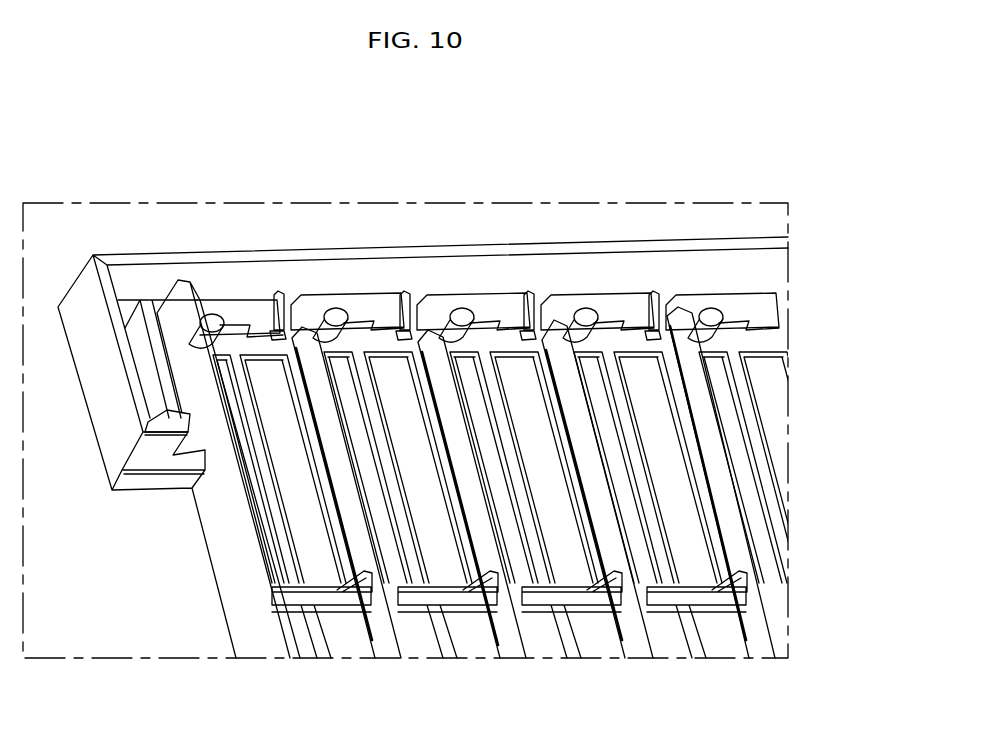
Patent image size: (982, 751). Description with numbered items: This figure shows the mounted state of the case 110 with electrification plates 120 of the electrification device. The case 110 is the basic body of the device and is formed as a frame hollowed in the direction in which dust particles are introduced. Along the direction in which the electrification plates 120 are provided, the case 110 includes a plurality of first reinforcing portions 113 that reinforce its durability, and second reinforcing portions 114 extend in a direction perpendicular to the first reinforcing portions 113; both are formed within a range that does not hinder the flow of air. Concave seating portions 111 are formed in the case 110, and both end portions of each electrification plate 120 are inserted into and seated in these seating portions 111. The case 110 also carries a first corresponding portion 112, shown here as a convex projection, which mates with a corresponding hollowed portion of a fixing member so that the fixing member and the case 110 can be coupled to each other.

The case 110 is at (134, 186).
The seating portion 111 is at (402, 306).
The first corresponding portion 112 is at (466, 313).
The first reinforcing portion 113 is at (544, 542).
The second reinforcing portion 114 is at (586, 650).
The electrification plate 120 is at (722, 448).